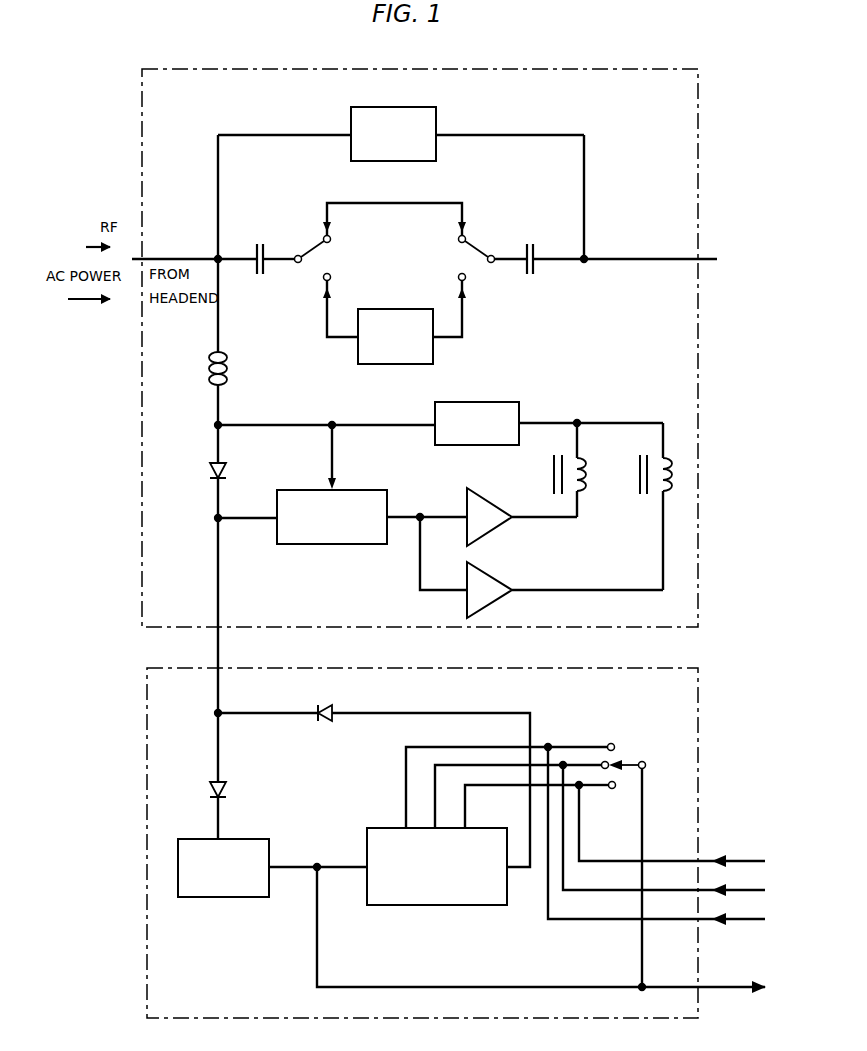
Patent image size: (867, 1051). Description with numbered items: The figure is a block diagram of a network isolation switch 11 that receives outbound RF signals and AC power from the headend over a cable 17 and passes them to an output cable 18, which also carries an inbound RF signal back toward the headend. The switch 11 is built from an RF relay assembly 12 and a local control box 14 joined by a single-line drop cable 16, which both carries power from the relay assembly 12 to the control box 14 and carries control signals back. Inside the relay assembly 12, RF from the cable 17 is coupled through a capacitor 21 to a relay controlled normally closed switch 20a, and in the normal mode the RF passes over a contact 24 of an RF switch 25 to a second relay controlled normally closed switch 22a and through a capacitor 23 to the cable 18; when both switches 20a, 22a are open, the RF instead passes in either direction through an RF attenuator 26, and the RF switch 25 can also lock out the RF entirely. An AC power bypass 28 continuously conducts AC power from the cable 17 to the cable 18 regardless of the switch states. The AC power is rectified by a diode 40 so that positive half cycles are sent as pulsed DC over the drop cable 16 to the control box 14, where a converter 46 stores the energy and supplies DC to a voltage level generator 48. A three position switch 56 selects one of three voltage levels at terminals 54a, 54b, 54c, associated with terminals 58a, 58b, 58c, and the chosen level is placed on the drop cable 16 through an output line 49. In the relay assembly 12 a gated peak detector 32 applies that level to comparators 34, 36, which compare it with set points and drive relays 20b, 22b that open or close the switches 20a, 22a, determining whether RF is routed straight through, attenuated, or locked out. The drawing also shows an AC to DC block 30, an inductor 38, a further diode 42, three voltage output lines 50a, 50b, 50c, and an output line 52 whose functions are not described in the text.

The network isolation switch 11 is at (750, 188).
The RF relay assembly 12 is at (632, 69).
The local control box 14 is at (640, 668).
The drop cable 16 is at (218, 652).
The cable 17 is at (182, 259).
The cable 18 is at (644, 258).
The relay controlled normally closed switch 20a is at (320, 242).
The relay 20b is at (554, 469).
The capacitor 21 is at (259, 242).
The relay controlled normally closed switch 22a is at (472, 243).
The relay 22b is at (638, 477).
The capacitor 23 is at (528, 241).
The contact 24 is at (408, 203).
The RF switch 25 is at (404, 266).
The RF attenuator 26 is at (403, 309).
The AC power bypass 28 is at (408, 107).
The AC to DC converter 30 is at (488, 402).
The gated peak detector 32 is at (366, 491).
The comparator 34 is at (488, 502).
The comparator 36 is at (488, 577).
The inductor 38 is at (227, 367).
The diode 40 is at (226, 468).
The diode 42 is at (235, 792).
The converter 46 is at (258, 839).
The voltage level generator 48 is at (368, 828).
The output line 49 is at (475, 712).
The voltage output line 50a is at (748, 919).
The voltage output line 50b is at (748, 890).
The voltage output line 50c is at (748, 861).
The output line 52 is at (748, 987).
The terminal 54a is at (610, 744).
The terminal 54b is at (610, 763).
The terminal 54c is at (612, 789).
The three position switch 56 is at (678, 761).
The terminal 58a is at (406, 790).
The terminal 58b is at (435, 797).
The terminal 58c is at (465, 811).